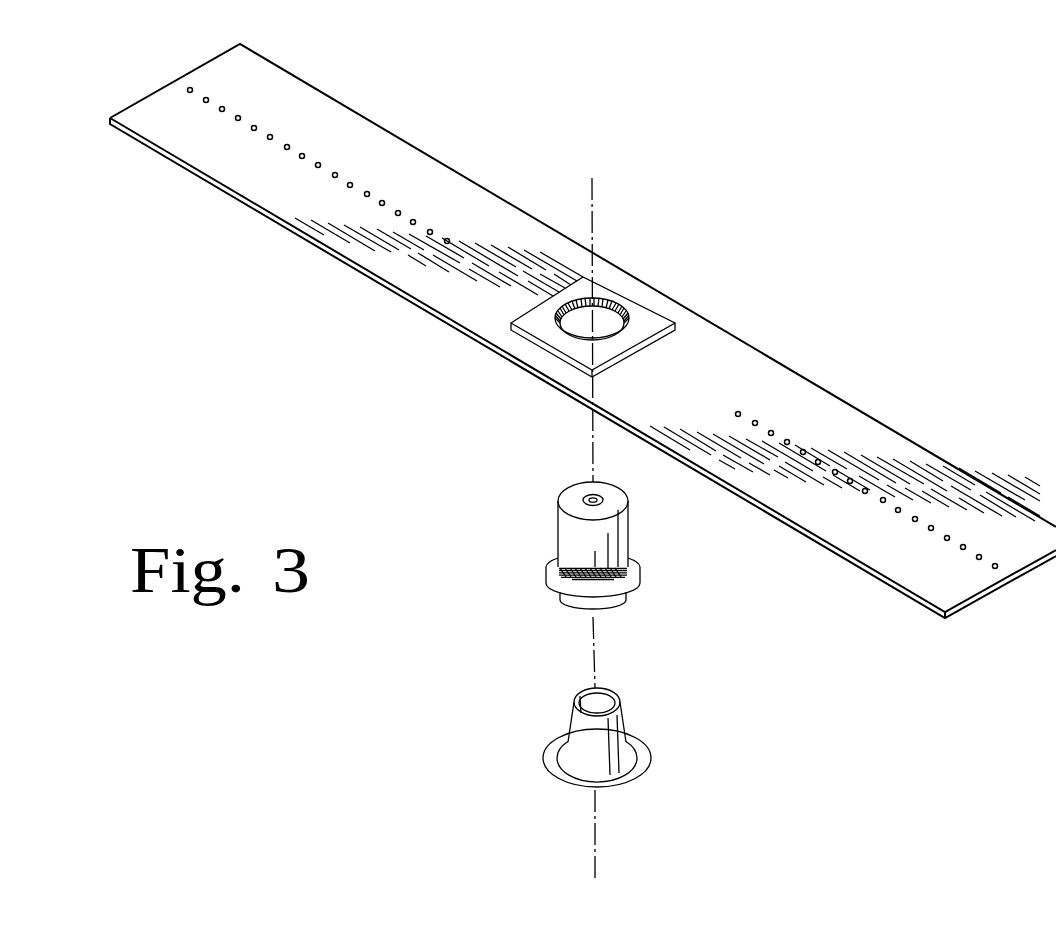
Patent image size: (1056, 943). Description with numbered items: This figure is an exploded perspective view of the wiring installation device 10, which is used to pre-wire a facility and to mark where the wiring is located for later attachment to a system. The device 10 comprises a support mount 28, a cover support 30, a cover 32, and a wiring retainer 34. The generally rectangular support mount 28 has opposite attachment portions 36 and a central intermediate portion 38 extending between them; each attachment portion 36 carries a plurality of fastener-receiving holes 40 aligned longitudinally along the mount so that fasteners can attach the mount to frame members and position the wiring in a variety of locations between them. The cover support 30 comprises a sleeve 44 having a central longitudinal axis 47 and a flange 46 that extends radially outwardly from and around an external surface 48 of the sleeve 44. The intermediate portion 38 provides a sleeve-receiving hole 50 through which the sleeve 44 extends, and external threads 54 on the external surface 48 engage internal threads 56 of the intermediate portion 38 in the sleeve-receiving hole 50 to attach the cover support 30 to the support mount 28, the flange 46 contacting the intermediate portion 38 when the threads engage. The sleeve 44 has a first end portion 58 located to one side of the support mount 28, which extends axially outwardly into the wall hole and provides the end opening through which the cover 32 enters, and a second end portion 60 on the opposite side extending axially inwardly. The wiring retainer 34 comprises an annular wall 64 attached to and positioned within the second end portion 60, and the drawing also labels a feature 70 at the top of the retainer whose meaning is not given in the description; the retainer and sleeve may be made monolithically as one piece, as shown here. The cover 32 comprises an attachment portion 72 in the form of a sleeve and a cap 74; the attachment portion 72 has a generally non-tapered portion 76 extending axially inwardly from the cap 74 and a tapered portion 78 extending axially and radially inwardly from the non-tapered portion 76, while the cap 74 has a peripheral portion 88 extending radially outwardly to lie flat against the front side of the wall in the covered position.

The wiring installation device 10 is at (875, 218).
The support mount 28 is at (480, 216).
The cover support 30 is at (550, 533).
The cover 32 is at (630, 702).
The wiring retainer 34 is at (565, 488).
The attachment portions 36 is at (307, 112).
The intermediate portion 38 is at (640, 330).
The fastener-receiving holes 40 is at (253, 241).
The sleeve 44 is at (630, 528).
The flange 46 is at (643, 562).
The central longitudinal axis 47 is at (592, 190).
The external surface 48 is at (632, 526).
The sleeve-receiving hole 50 is at (610, 303).
The external threads 54 is at (557, 577).
The internal threads 56 is at (697, 316).
The first end portion 58 is at (575, 605).
The second end portion 60 is at (630, 540).
The annular wall 64 is at (585, 490).
The opening in nut top 70 is at (597, 497).
The attachment portion 72 is at (627, 720).
The cap 74 is at (643, 748).
The non-tapered portion 76 is at (570, 757).
The tapered portion 78 is at (570, 715).
The peripheral portion 88 is at (643, 763).